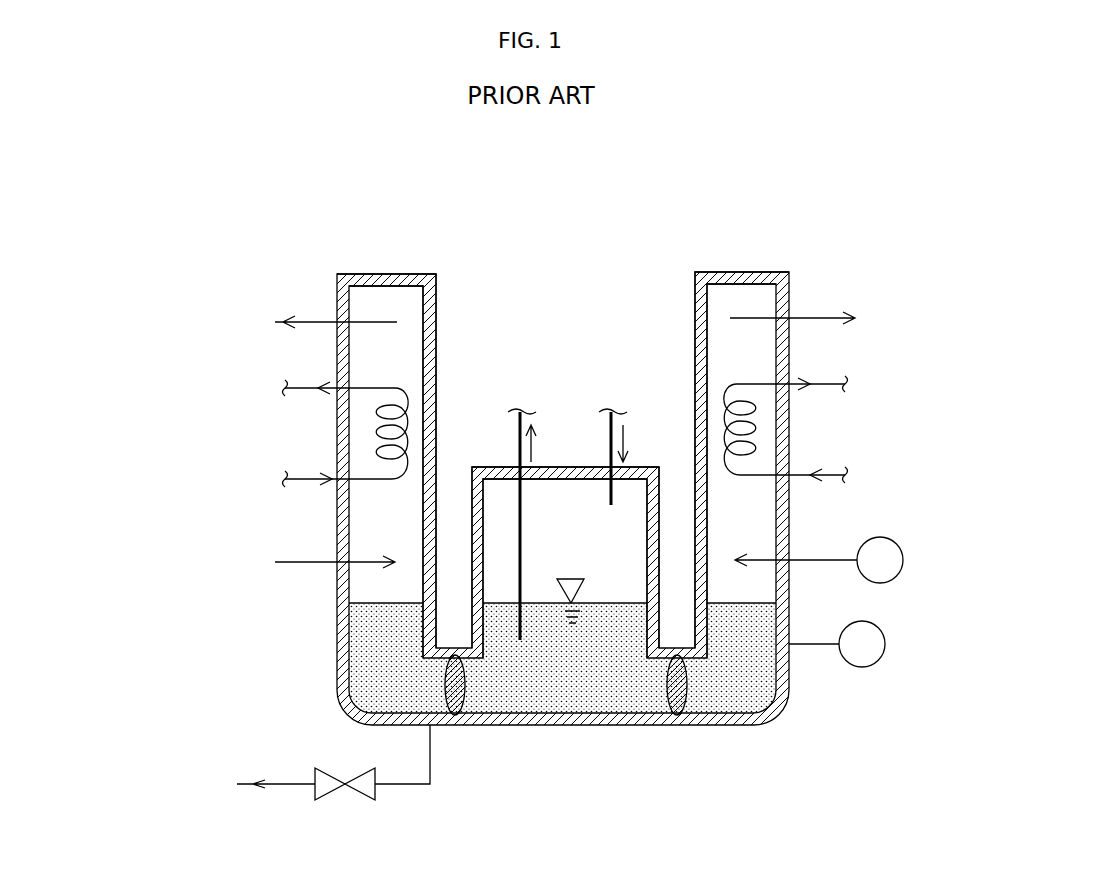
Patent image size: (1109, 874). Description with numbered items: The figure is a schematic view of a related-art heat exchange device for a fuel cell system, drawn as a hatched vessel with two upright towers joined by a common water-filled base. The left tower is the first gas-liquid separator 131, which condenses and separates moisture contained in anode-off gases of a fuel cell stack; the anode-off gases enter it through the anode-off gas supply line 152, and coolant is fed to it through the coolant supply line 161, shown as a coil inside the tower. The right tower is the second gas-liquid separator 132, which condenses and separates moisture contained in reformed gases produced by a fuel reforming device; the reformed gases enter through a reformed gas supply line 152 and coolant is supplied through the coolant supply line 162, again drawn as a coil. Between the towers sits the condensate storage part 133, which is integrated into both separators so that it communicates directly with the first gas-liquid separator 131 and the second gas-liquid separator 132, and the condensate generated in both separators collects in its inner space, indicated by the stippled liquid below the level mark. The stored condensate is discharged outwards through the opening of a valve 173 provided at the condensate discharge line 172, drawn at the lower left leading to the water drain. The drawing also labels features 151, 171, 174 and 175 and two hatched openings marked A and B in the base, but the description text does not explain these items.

The first gas-liquid separator 131 is at (388, 273).
The second gas-liquid separator 132 is at (738, 272).
The condensate storage part 133 is at (476, 467).
The gas flow passage (right) 151 is at (820, 318).
The anode-off gas supply line 152 is at (313, 322).
The coolant supply line 161 is at (822, 386).
The coolant supply line 162 is at (313, 480).
The water supply/discharge pipes 171 is at (607, 442).
The condensate discharge line 172 is at (417, 790).
The valve 173 is at (355, 800).
The water level sensor S2 174 is at (886, 644).
The water level sensor S2 175 is at (905, 560).
The opening A is at (460, 722).
The opening B is at (680, 722).